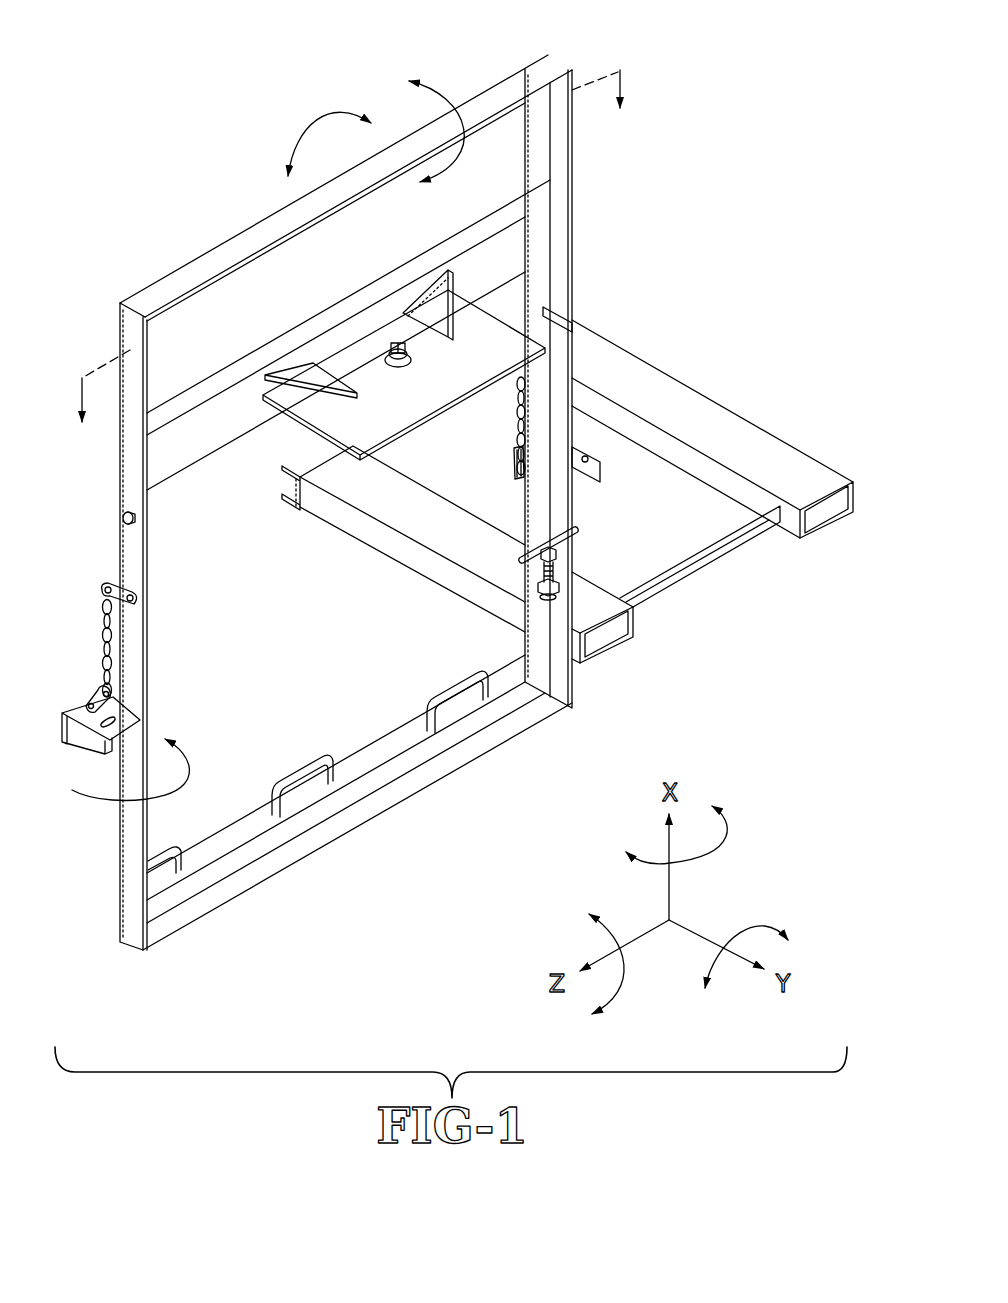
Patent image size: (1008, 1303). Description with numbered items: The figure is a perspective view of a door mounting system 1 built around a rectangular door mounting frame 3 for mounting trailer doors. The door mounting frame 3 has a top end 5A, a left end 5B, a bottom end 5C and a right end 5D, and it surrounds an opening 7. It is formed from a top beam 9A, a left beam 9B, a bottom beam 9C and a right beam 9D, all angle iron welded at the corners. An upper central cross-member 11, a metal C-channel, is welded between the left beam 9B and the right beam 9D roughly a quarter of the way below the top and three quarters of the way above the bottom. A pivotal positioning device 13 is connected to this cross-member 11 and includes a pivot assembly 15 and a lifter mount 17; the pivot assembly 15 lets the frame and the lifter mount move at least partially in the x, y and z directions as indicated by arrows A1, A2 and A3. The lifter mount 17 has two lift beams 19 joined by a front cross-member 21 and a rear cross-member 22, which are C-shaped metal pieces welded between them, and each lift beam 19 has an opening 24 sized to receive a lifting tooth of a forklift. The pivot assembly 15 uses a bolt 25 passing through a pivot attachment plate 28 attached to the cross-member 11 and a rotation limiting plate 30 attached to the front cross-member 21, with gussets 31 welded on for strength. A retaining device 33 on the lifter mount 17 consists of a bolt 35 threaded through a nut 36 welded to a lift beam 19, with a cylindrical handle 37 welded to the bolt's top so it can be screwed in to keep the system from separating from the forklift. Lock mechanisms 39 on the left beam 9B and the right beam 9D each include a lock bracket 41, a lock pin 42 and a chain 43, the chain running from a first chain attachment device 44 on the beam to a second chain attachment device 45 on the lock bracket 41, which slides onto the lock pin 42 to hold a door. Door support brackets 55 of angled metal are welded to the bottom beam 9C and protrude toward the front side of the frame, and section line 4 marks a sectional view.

The door mounting system 1 is at (702, 98).
The door mounting frame 3 is at (582, 283).
The section line 4- 4 is at (348, 261).
The top end 5A is at (260, 204).
The left end 5B is at (106, 841).
The bottom end 5C is at (344, 861).
The right end 5D is at (594, 237).
The opening 7 is at (170, 334).
The top beam 9A is at (245, 240).
The left beam 9B is at (132, 489).
The bottom beam 9C is at (398, 812).
The right beam 9D is at (573, 167).
The upper central cross-member 11 is at (230, 432).
The pivotal positioning device 13 is at (692, 366).
The pivot assembly 15 is at (397, 355).
The lifter mount 17 is at (708, 394).
The lift beams 19 is at (727, 421).
The front cross-member 21 is at (291, 506).
The rear cross-member 22 is at (700, 563).
The openings 24 is at (817, 524).
The bolt 25 is at (369, 334).
The pivot attachment plate 28 is at (440, 274).
The rotation limiting plate 30 is at (450, 385).
The gussets 31 is at (438, 282).
The retaining device 33 is at (542, 604).
The bolt 35 is at (530, 593).
The nut 36 is at (562, 584).
The handle 37 is at (570, 512).
The lock mechanisms 39 is at (85, 636).
The lock bracket 41 is at (128, 722).
The lock pin 42 is at (122, 518).
The chain 43 is at (104, 660).
The first chain attachment device 44 is at (137, 591).
The second chain attachment device 45 is at (100, 690).
The door support brackets 55 is at (452, 684).
The arrow A1 is at (415, 801).
The arrow A2 is at (534, 540).
The arrow A3 is at (536, 552).